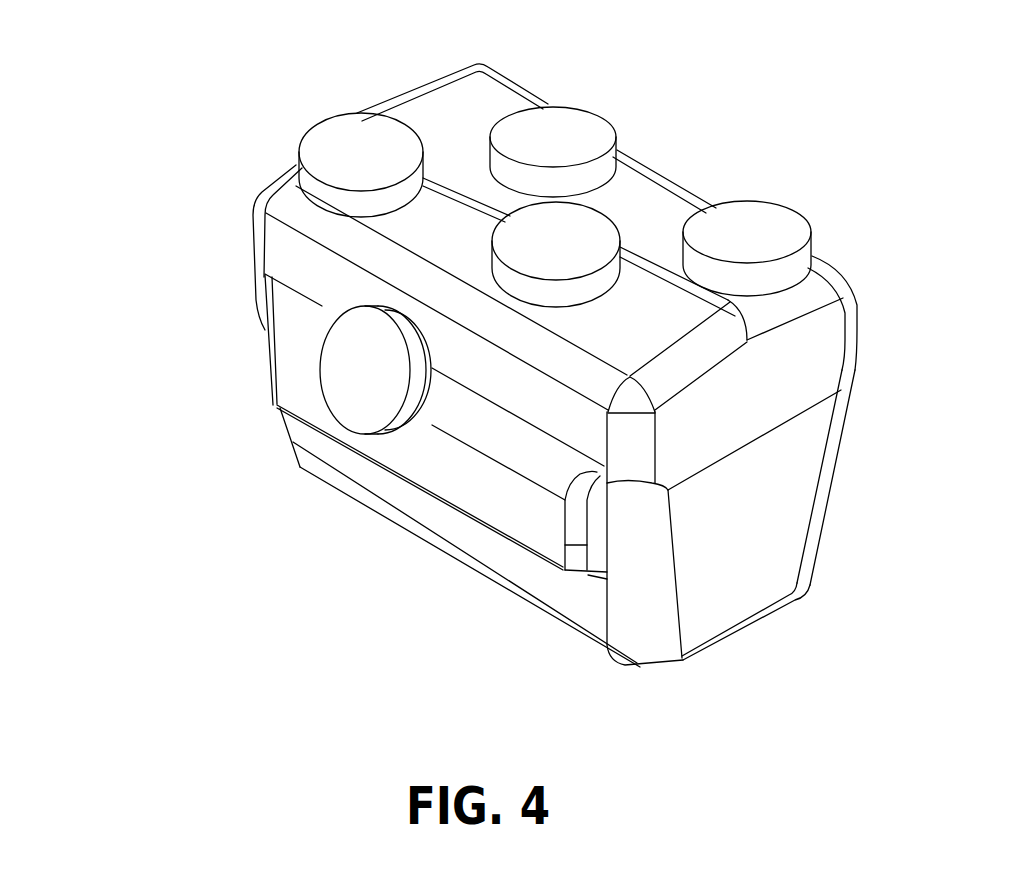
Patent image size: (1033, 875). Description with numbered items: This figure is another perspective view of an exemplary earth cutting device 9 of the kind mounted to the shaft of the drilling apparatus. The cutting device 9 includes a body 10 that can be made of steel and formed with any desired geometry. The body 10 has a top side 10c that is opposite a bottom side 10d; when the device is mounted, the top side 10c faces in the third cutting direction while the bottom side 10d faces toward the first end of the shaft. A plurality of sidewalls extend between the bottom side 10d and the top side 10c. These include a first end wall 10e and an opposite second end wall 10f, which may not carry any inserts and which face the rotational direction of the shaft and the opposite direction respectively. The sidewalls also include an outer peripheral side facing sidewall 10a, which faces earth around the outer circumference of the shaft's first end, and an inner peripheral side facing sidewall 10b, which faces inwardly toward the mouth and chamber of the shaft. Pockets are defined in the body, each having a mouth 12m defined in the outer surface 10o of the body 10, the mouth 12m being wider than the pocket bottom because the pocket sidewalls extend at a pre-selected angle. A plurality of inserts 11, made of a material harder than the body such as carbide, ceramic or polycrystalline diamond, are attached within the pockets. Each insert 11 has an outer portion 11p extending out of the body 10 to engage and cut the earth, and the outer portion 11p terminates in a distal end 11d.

The earth cutting device 9 is at (282, 563).
The body 10 is at (843, 330).
The outer peripheral side facing sidewall 10a is at (540, 95).
The inner peripheral side facing sidewall 10b is at (275, 405).
The top side 10c is at (455, 120).
The bottom side 10d is at (632, 657).
The first end wall 10e is at (255, 260).
The second end wall 10f is at (690, 610).
The outer surface 10o is at (278, 202).
The inserts 11 is at (553, 108).
The distal end 11d is at (350, 142).
The outer portion 11p is at (350, 348).
The mouth 12m is at (620, 170).